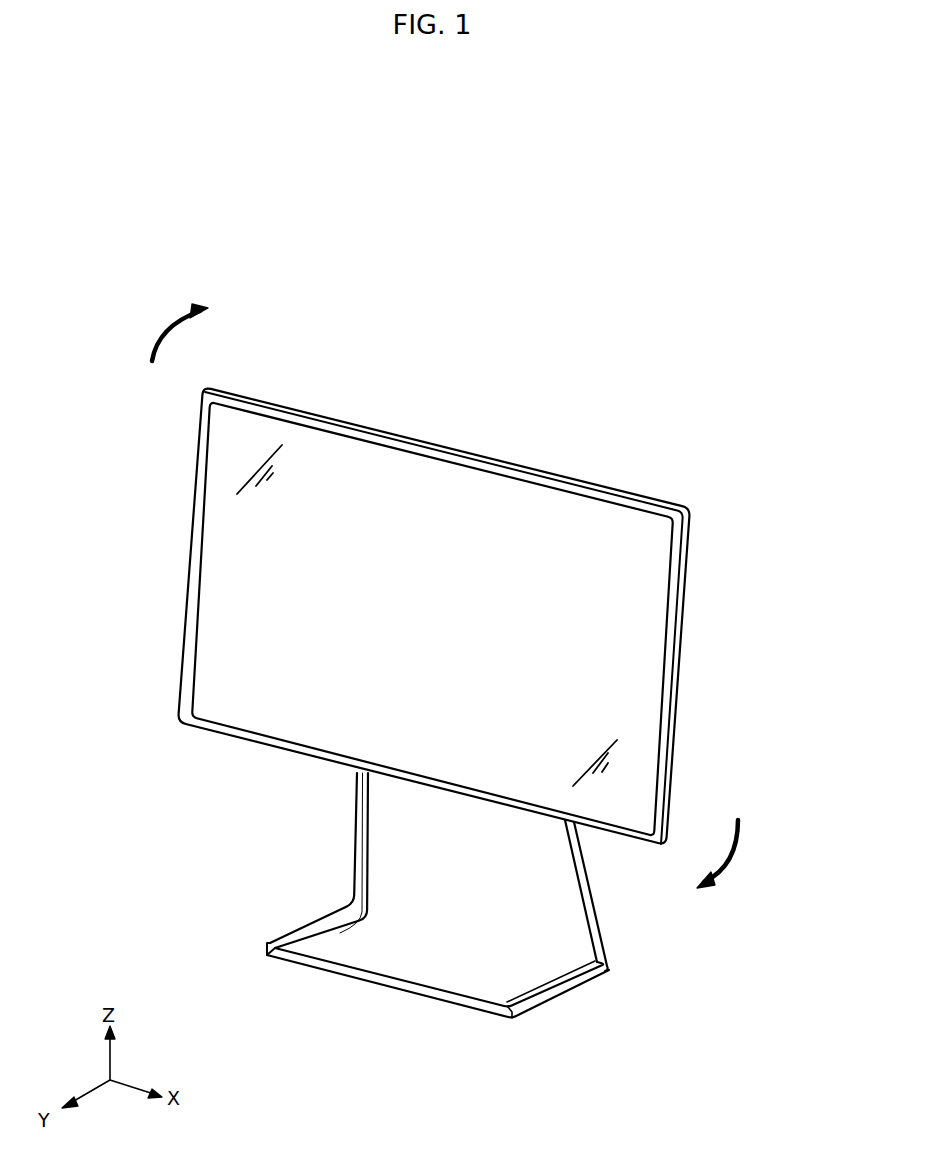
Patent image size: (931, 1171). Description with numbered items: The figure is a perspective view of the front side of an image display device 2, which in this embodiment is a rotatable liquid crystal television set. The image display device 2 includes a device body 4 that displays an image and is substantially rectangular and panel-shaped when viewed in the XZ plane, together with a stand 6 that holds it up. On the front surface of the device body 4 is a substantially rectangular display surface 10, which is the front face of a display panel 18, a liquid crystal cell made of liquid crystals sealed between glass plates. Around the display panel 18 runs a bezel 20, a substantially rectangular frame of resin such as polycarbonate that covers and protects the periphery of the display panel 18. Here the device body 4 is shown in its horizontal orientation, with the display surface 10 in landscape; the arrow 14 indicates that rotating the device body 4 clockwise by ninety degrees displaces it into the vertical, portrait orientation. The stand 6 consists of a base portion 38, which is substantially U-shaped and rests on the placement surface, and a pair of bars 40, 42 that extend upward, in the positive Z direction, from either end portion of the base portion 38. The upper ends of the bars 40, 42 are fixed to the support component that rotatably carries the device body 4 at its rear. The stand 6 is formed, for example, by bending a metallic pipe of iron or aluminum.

The image display device 2 is at (433, 596).
The device body 4 is at (686, 598).
The stand 6 is at (464, 911).
The display surface 10 is at (212, 622).
The arrow 14 is at (172, 323).
The display panel 18 is at (213, 571).
The bezel 20 is at (668, 690).
The base portion 38 is at (378, 982).
The bar 40 is at (355, 847).
The bar 42 is at (576, 888).